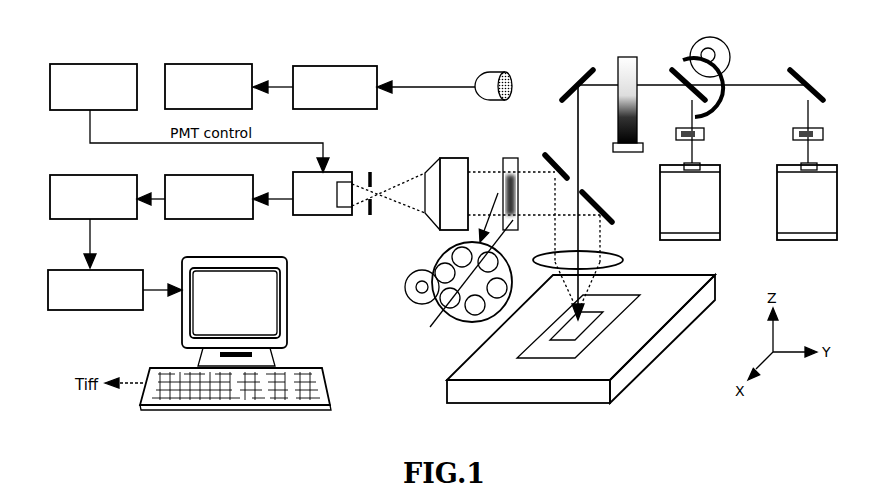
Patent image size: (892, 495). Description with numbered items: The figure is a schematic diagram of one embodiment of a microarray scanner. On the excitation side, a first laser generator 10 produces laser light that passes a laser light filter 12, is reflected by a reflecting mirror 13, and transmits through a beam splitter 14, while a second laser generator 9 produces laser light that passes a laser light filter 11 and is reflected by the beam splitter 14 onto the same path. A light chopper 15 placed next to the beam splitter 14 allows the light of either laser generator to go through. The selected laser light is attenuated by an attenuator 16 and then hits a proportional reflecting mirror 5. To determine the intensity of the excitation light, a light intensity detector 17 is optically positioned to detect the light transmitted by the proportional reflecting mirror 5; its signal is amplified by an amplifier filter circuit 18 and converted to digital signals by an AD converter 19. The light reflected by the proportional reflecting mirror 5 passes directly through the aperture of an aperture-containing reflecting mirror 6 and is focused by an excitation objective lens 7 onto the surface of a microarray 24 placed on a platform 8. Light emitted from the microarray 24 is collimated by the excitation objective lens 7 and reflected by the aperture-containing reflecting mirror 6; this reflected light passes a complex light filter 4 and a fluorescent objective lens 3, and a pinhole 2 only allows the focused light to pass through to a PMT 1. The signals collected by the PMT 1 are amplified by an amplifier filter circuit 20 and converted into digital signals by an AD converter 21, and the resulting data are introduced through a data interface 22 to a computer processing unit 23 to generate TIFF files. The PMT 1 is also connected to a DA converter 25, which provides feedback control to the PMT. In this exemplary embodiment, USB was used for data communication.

The PMT 1 is at (305, 215).
The pinhole 2 is at (370, 217).
The fluorescent objective lens 3 is at (423, 207).
The complex light filter 4 is at (423, 307).
The proportional reflecting mirror 5 is at (578, 80).
The aperture-containing reflecting mirror 6 is at (615, 262).
The excitation objective lens 7 is at (602, 200).
The platform 8 is at (627, 373).
The second laser generator 9 is at (710, 230).
The first laser generator 10 is at (828, 220).
The laser light filter 11 is at (700, 133).
The laser light filter 12 is at (825, 134).
The reflecting mirror 13 is at (805, 73).
The beam splitter 14 is at (675, 60).
The light chopper 15 is at (712, 42).
The attenuator 16 is at (625, 57).
The light intensity detector 17 is at (495, 72).
The amplifier filter circuit 18 is at (317, 65).
The AD converter 19 is at (185, 63).
The amplifier filter circuit 20 is at (175, 181).
The AD converter 21 is at (57, 191).
The data interface 22 is at (50, 292).
The computer processing unit 23 is at (182, 340).
The microarray 24 is at (563, 337).
The DA converter 25 is at (72, 63).